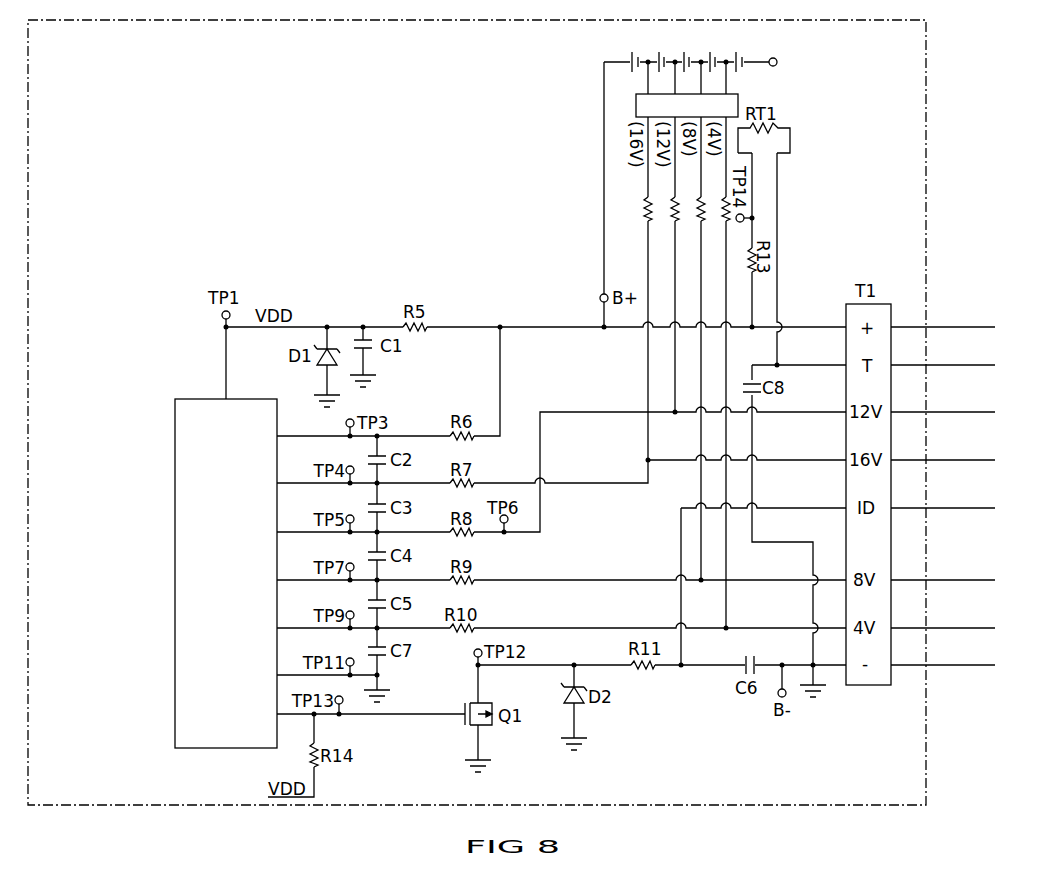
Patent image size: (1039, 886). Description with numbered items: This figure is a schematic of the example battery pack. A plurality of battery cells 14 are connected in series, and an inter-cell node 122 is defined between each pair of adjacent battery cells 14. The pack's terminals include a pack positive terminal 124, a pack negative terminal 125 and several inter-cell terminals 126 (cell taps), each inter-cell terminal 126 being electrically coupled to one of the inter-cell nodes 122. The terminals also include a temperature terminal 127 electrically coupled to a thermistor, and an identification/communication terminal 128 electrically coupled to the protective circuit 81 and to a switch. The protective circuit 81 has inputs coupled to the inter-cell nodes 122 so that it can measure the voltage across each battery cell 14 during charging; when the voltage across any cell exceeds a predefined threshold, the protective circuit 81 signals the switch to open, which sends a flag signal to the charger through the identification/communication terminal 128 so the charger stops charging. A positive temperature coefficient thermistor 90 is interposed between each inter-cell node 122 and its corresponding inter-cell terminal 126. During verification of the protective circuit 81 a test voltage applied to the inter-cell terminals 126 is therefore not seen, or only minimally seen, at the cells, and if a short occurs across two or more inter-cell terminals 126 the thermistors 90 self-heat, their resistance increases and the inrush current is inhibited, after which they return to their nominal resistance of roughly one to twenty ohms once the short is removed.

The battery cells 14 is at (722, 51).
The inter-cell node 122 is at (675, 58).
The positive temperature coefficient thermistor 90 is at (675, 224).
The protective circuit 81 is at (210, 399).
The pack positive terminal 124 is at (906, 327).
The pack negative terminal 125 is at (906, 665).
The inter-cell terminal 126 is at (906, 412).
The temperature terminal 127 is at (906, 365).
The identification/communication terminal 128 is at (906, 508).